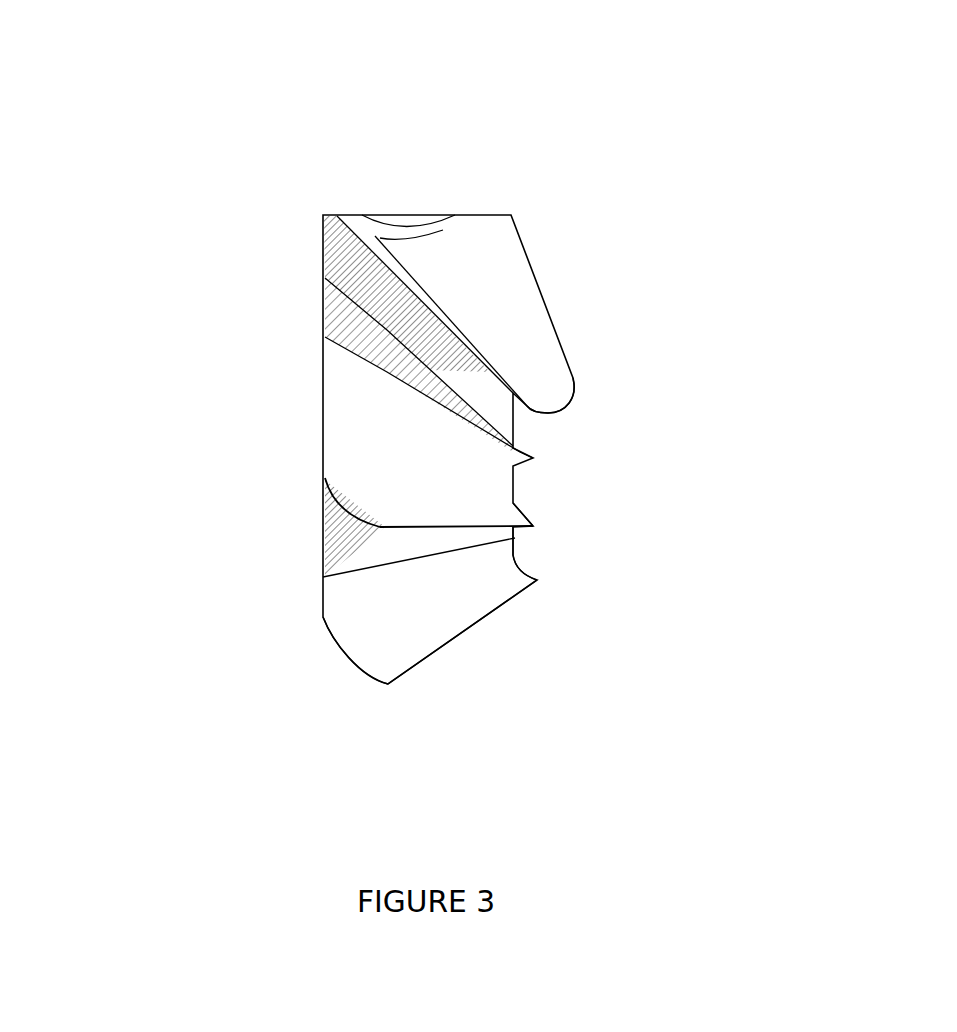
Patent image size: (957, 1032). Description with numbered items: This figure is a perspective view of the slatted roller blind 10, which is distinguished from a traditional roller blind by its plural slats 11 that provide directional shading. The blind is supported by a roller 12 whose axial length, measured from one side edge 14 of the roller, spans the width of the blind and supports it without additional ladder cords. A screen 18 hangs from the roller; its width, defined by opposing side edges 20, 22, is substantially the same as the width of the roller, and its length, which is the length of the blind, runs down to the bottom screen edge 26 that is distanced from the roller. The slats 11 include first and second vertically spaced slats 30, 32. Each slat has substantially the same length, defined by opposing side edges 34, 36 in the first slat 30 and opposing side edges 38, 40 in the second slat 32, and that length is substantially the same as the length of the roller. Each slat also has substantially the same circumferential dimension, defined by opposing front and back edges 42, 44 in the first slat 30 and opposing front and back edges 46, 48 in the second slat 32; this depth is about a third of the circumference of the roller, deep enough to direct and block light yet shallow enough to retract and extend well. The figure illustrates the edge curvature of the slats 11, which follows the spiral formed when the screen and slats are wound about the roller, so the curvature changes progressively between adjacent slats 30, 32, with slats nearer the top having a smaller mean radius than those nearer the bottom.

The slatted roller blind 10 is at (432, 177).
The slats 11 is at (662, 298).
The roller 12 is at (345, 192).
The side edge of roller 14 is at (407, 223).
The screen 18 is at (320, 228).
The side edge of screen 20 is at (322, 243).
The side edge of screen 22 is at (520, 413).
The bottom screen edge 26 is at (313, 772).
The first slat 30 is at (410, 477).
The second slat 32 is at (417, 642).
The side edge of first slat 34 is at (517, 503).
The side edge of first slat 36 is at (330, 520).
The side edge of second slat 38 is at (525, 562).
The side edge of second slat 40 is at (352, 672).
The front edge of first slat 42 is at (323, 577).
The back edge of first slat 44 is at (430, 462).
The front edge of second slat 46 is at (483, 625).
The back edge of second slat 48 is at (400, 567).